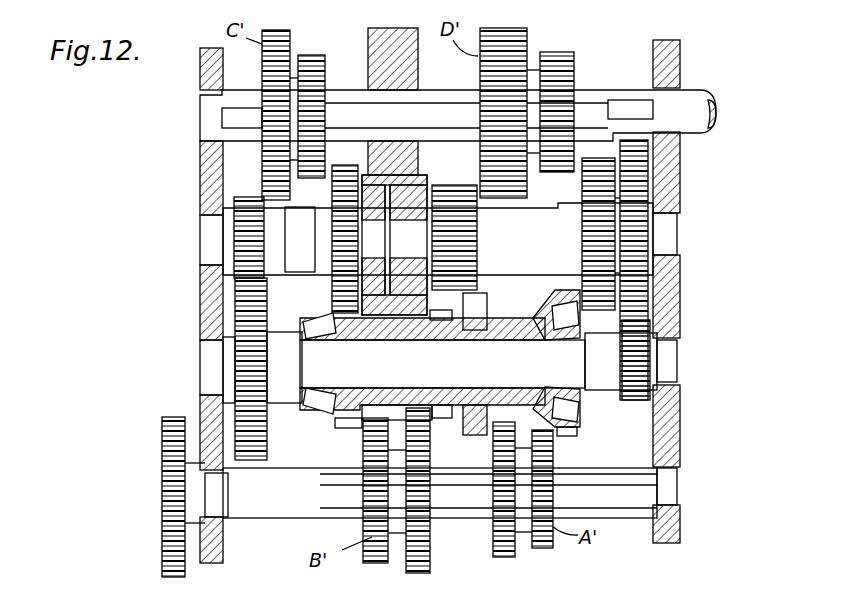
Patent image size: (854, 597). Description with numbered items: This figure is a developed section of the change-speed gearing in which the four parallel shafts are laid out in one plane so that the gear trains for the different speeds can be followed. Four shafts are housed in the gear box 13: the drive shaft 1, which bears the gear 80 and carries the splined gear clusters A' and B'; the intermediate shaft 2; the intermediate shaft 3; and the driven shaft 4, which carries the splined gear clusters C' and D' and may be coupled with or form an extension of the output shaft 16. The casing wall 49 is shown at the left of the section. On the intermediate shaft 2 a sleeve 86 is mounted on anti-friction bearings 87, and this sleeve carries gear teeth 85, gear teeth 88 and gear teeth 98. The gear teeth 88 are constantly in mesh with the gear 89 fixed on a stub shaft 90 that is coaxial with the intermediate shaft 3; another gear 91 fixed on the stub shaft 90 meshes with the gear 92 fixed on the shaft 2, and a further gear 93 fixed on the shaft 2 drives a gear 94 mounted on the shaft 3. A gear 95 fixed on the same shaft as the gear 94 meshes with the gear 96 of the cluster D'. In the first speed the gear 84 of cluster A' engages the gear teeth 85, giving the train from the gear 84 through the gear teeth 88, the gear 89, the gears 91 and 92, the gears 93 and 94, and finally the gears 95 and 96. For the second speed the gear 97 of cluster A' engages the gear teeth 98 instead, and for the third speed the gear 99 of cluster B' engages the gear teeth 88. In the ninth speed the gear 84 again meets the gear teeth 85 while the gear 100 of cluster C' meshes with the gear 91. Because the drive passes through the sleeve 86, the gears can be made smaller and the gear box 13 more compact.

The drive shaft 1 is at (666, 482).
The intermediate shaft 2 is at (666, 355).
The intermediate shaft 3 is at (663, 236).
The driven shaft 4 is at (689, 97).
The gear box 13 is at (680, 194).
The output shaft 16 is at (716, 110).
The casing wall 49 is at (205, 279).
The gear 80 is at (170, 428).
The gear 84 is at (543, 551).
The gear teeth 85 is at (568, 436).
The sleeve 86 is at (500, 327).
The anti-friction bearings 87 is at (569, 332).
The gear teeth 88 is at (347, 429).
The gear 89 is at (343, 280).
The stub shaft 90 is at (200, 240).
The gear 91 is at (256, 254).
The gear 92 is at (263, 441).
The gear 93 is at (640, 402).
The gear 94 is at (641, 280).
The gear 95 is at (468, 252).
The gear 96 is at (513, 32).
The gear 97 is at (507, 560).
The gear teeth 98 is at (476, 436).
The gear 99 is at (378, 565).
The gear 100 is at (286, 33).